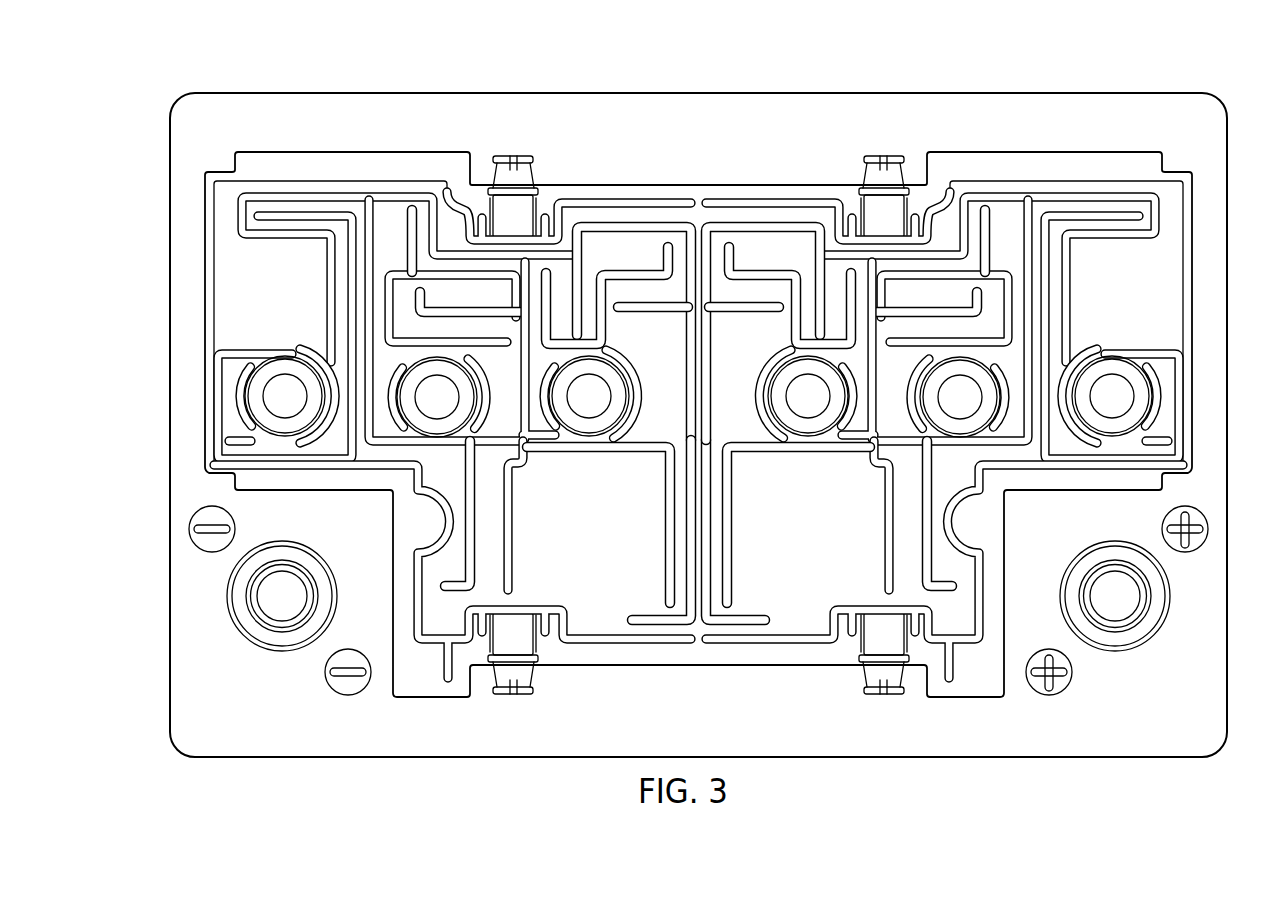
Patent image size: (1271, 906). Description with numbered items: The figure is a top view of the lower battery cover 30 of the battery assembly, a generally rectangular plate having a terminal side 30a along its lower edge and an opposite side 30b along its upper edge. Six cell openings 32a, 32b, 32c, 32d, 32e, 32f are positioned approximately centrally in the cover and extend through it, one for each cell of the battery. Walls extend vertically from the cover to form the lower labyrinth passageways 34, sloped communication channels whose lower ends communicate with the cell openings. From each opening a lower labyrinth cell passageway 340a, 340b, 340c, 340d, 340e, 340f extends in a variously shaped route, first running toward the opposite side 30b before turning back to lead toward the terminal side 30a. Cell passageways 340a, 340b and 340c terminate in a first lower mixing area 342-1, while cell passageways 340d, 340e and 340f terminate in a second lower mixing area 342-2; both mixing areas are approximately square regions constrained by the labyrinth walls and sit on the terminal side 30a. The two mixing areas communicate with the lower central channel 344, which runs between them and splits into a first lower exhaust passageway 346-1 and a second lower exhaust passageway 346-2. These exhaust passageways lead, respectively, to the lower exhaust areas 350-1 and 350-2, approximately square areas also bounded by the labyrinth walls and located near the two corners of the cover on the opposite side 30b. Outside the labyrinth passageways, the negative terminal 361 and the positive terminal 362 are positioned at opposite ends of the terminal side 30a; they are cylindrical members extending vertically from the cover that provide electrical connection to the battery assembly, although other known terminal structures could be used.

The lower battery cover 30 is at (124, 110).
The terminal side 30a is at (1192, 760).
The opposite side 30b is at (1190, 91).
The cell opening 32a is at (271, 406).
The cell opening 32b is at (423, 407).
The cell opening 32c is at (575, 406).
The cell opening 32d is at (794, 406).
The cell opening 32e is at (946, 407).
The cell opening 32f is at (1099, 406).
The lower labyrinth passageways 34 is at (446, 598).
The lower labyrinth cell passageway 340a is at (216, 452).
The lower labyrinth cell passageway 340b is at (449, 308).
The lower labyrinth cell passageway 340c is at (606, 255).
The lower labyrinth cell passageway 340d is at (750, 255).
The lower labyrinth cell passageway 340e is at (906, 308).
The lower labyrinth cell passageway 340f is at (1139, 207).
The first lower mixing area 342-1 is at (616, 532).
The second lower mixing area 342-2 is at (834, 532).
The lower central channel 344 is at (698, 608).
The first lower exhaust passageway 346-1 is at (352, 188).
The second lower exhaust passageway 346-2 is at (1006, 188).
The lower exhaust area 350-1 is at (300, 292).
The lower exhaust area 350-2 is at (1146, 292).
The negative terminal 361 is at (255, 644).
The positive terminal 362 is at (1142, 644).